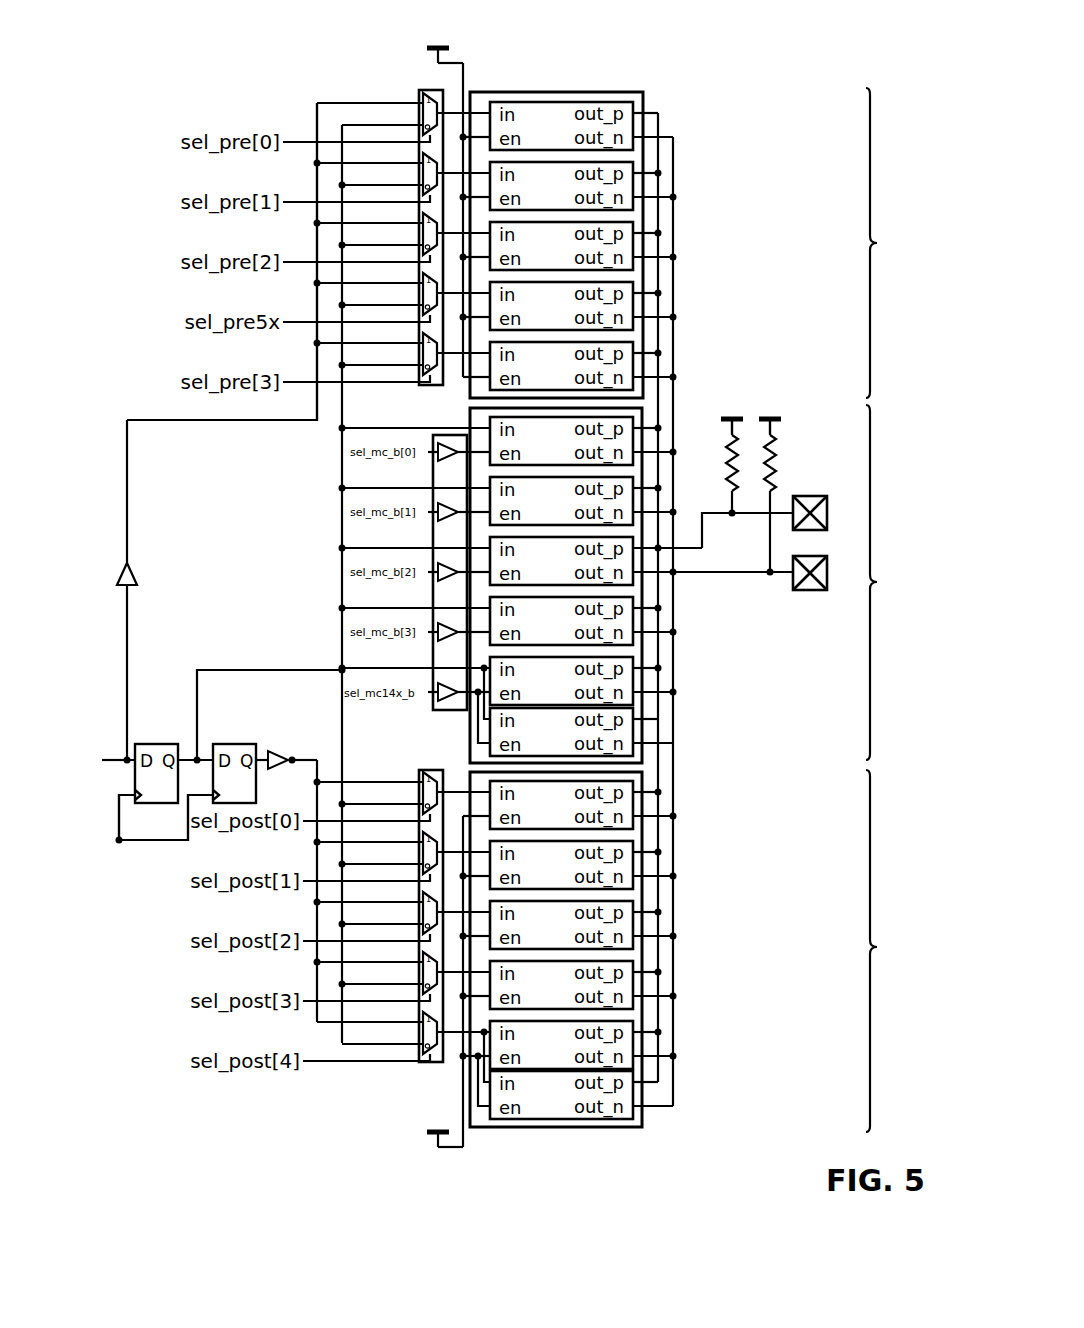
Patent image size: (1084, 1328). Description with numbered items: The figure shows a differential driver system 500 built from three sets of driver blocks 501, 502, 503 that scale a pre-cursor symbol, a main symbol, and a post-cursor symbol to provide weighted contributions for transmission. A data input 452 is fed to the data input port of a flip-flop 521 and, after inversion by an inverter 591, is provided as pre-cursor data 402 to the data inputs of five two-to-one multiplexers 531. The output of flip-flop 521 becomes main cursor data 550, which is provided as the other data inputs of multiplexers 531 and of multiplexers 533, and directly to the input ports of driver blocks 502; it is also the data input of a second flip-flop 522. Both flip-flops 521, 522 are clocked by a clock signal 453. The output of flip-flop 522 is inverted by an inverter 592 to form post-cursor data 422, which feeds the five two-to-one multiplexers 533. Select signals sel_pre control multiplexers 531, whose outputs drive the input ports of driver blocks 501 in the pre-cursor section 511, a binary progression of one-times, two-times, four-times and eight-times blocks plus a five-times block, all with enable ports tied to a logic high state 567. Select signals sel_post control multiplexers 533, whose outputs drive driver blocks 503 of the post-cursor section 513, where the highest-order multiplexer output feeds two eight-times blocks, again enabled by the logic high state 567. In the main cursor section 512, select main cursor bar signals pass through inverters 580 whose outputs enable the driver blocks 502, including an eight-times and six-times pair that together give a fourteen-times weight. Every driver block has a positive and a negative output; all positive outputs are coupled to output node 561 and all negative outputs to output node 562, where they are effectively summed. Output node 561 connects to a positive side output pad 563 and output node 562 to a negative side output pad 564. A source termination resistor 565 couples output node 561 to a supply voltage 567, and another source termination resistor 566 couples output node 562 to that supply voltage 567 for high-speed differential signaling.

The differential driver system 500 is at (205, 1158).
The driver blocks 501 is at (545, 92).
The driver blocks 502 is at (470, 750).
The driver blocks 503 is at (530, 1127).
The pre-cursor section 511 is at (895, 243).
The main cursor section 512 is at (895, 582).
The post-cursor section 513 is at (895, 951).
The flip-flop 521 is at (160, 744).
The flip-flop 522 is at (238, 744).
The multiplexers 531 is at (418, 90).
The multiplexers 533 is at (432, 1062).
The main cursor data 550 is at (215, 670).
The output node 561 is at (662, 113).
The output node 562 is at (676, 178).
The positive side output pad 563 is at (810, 496).
The negative side output pad 564 is at (810, 590).
The source termination resistor 565 is at (728, 470).
The source termination resistor 566 is at (766, 419).
The logic high state / supply voltage 567 is at (450, 48).
The inverters 580 is at (433, 716).
The inverter 591 is at (140, 580).
The inverter 592 is at (270, 750).
The pre-cursor data 402 is at (162, 420).
The post-cursor data 422 is at (317, 760).
The data input 452 is at (108, 758).
The clock signal 453 is at (119, 840).